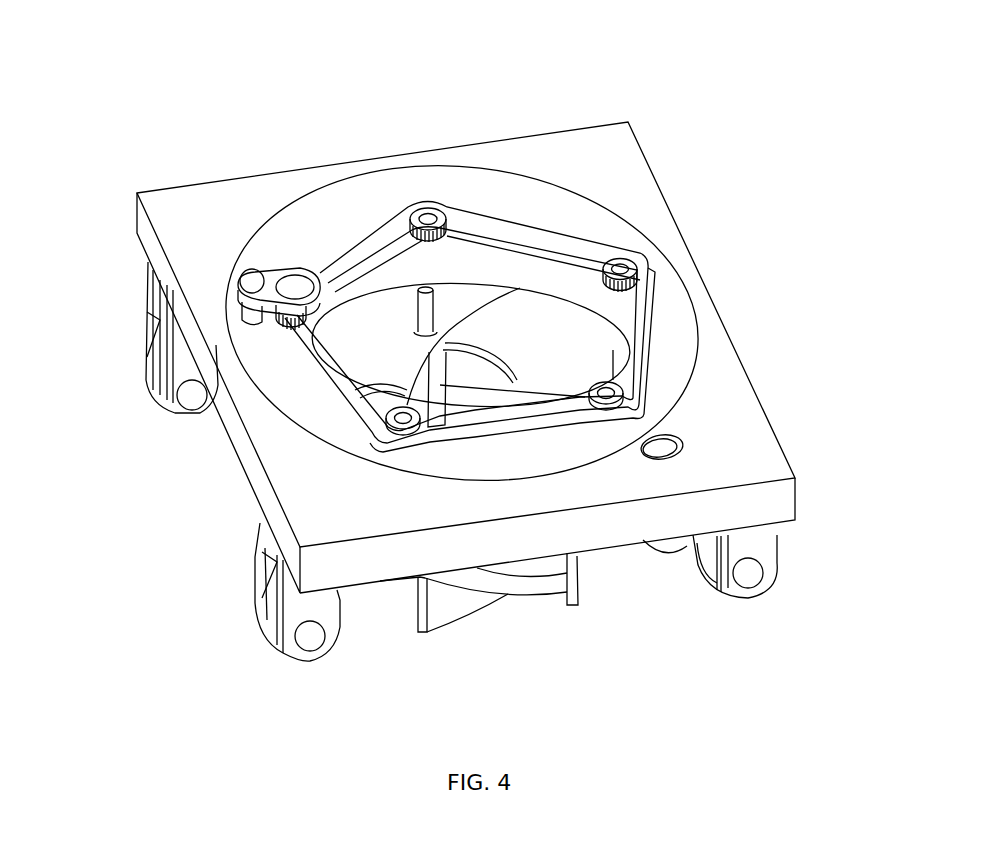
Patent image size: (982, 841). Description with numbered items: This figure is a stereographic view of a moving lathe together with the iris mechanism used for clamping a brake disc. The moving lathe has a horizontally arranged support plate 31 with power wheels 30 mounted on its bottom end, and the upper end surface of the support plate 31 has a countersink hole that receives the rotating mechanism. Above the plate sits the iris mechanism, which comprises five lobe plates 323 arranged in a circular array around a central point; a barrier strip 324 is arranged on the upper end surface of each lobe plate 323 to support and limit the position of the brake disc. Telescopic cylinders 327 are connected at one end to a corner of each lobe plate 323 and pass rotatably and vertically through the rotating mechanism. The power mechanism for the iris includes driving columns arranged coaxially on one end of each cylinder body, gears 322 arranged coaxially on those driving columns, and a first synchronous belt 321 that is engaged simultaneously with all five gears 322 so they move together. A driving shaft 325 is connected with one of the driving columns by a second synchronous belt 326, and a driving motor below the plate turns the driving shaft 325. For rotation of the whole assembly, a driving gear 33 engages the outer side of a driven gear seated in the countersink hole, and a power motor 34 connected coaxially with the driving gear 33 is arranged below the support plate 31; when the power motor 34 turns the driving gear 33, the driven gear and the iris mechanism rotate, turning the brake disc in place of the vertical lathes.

The power wheel 30 is at (780, 555).
The support plate 31 is at (725, 445).
The driving gear 33 is at (665, 448).
The power motor 34 is at (662, 550).
The first synchronous belt 321 is at (650, 315).
The gear 322 is at (640, 260).
The lobe plate 323 is at (537, 320).
The barrier strip 324 is at (452, 336).
The driving shaft 325 is at (252, 282).
The second synchronous belt 326 is at (268, 282).
The telescopic cylinder 327 is at (385, 428).